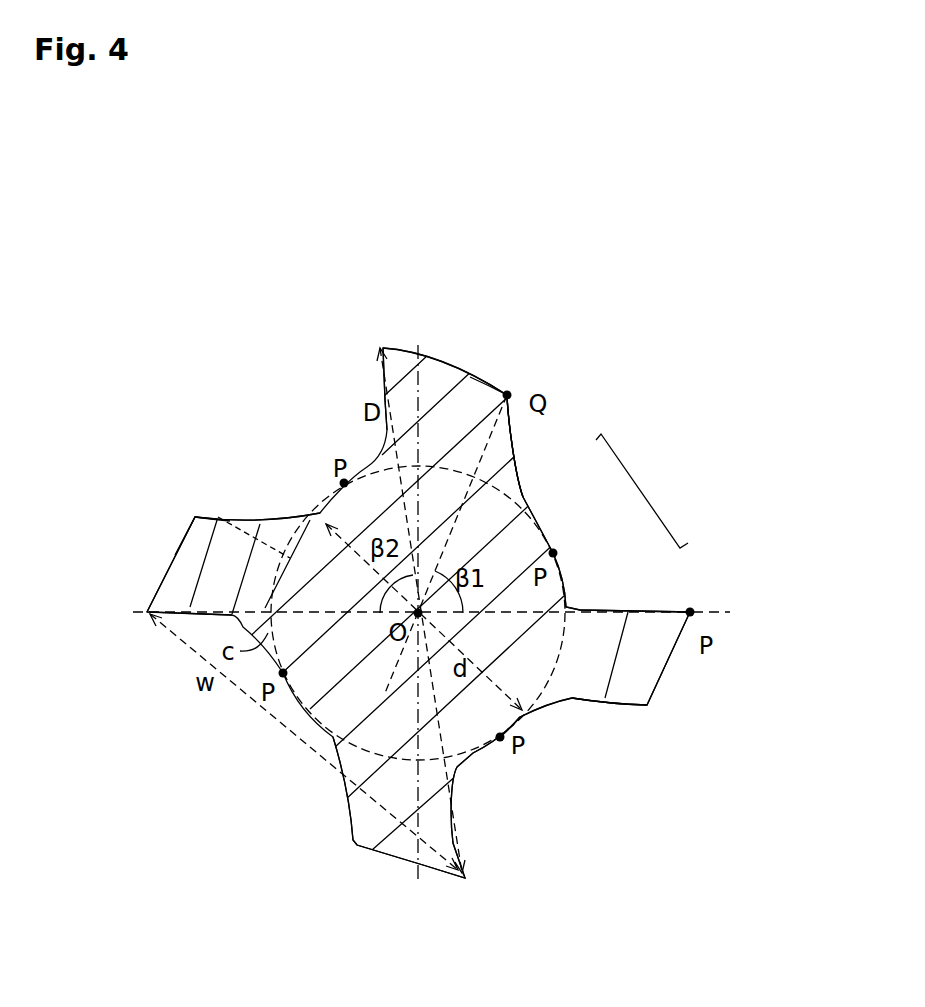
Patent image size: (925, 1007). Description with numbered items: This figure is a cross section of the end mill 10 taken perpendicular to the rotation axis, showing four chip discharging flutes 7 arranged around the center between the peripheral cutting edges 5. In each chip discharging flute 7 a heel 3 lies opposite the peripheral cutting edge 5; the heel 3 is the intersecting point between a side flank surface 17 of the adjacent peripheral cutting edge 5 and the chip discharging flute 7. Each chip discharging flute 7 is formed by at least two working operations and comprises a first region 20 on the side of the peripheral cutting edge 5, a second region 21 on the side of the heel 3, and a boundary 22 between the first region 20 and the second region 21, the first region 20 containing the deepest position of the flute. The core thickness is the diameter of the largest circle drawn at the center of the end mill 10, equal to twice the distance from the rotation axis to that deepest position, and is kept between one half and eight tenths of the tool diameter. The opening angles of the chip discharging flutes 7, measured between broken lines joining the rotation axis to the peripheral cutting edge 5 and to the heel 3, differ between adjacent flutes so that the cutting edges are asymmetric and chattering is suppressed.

The heel 3 is at (505, 392).
The peripheral cutting edge 5 is at (378, 348).
The chip discharging flute 7 is at (640, 500).
The end mill 10 is at (272, 413).
The side flank surface 17 is at (430, 357).
The first region 20 is at (590, 606).
The second region 21 is at (523, 497).
The boundary 22 is at (548, 540).